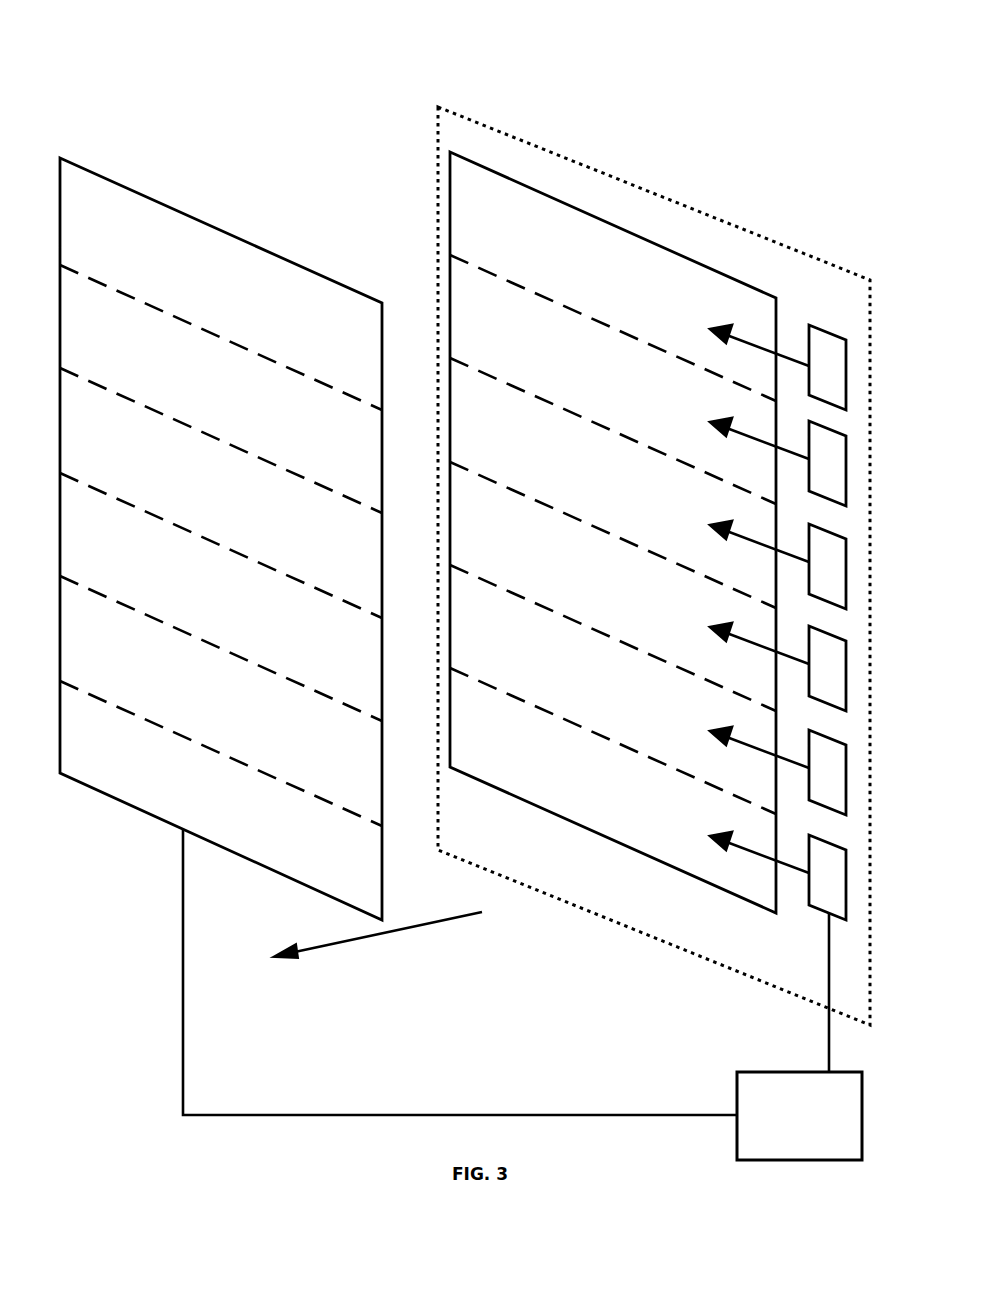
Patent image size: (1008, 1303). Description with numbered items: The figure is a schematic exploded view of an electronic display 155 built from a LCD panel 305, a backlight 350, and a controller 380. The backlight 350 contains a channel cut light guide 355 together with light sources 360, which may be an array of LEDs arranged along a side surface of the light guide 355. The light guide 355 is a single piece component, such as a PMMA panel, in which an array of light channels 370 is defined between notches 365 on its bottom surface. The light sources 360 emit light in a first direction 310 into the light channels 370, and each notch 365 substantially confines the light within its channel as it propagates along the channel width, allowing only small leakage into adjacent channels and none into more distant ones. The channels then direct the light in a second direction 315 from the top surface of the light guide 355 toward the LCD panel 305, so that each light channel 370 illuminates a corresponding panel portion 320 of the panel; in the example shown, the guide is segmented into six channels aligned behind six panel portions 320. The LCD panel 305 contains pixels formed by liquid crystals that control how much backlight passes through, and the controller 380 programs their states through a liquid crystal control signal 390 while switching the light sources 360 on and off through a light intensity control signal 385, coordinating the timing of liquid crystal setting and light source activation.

The electronic display 155 is at (460, 587).
The LCD panel 305 is at (132, 188).
The panel portion 320 is at (305, 293).
The backlight 350 is at (477, 125).
The channel cut light guide 355 is at (570, 208).
The notch 365 is at (487, 270).
The light source 360 is at (825, 337).
The first direction 310 is at (783, 352).
The light channel 370 is at (515, 757).
The second direction 315 is at (396, 933).
The liquid crystal control signal 390 is at (183, 935).
The light intensity control signal 385 is at (832, 1029).
The controller 380 is at (799, 1116).